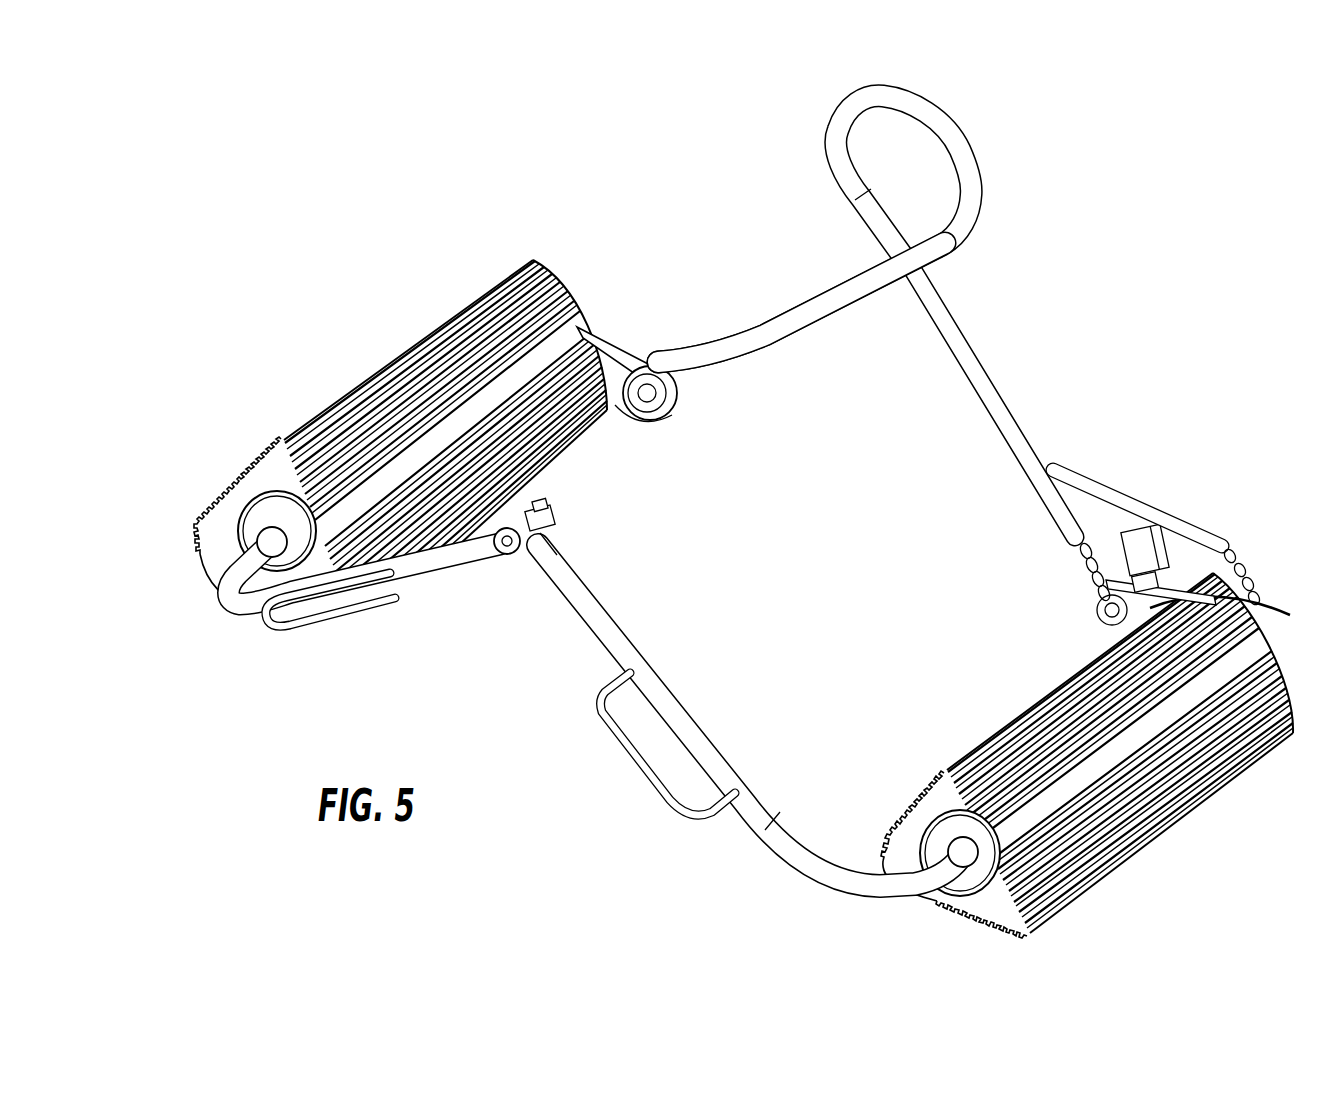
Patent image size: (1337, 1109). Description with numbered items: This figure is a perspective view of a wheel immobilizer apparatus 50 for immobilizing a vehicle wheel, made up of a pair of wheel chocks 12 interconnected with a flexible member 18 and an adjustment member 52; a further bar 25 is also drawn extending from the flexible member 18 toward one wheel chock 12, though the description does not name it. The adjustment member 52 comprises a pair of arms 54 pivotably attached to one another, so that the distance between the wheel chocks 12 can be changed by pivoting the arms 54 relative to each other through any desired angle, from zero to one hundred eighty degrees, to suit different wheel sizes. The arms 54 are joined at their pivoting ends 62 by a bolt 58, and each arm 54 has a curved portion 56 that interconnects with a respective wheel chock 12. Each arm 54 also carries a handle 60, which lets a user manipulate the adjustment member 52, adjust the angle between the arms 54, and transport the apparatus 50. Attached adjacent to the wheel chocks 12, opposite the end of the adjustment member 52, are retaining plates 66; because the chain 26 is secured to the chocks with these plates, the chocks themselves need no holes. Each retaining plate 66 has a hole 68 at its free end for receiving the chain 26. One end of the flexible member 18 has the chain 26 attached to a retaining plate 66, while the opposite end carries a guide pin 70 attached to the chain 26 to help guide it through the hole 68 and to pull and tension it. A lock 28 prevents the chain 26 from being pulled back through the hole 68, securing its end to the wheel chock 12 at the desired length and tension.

The wheel chock 12 is at (384, 352).
The flexible member 18 is at (1010, 418).
The cross bar 25 is at (768, 340).
The chain 26 is at (1080, 572).
The lock 28 is at (1172, 550).
The wheel immobilizer apparatus 50 is at (744, 542).
The adjustment member 52 is at (576, 731).
The arm 54 is at (571, 761).
The curved portion 56 is at (218, 597).
The bolt 58 is at (512, 577).
The handle 60 is at (265, 630).
The pivoting end 62 is at (555, 542).
The retaining plate 66 is at (612, 350).
The hole 68 is at (652, 420).
The guide pin 70 is at (1113, 495).